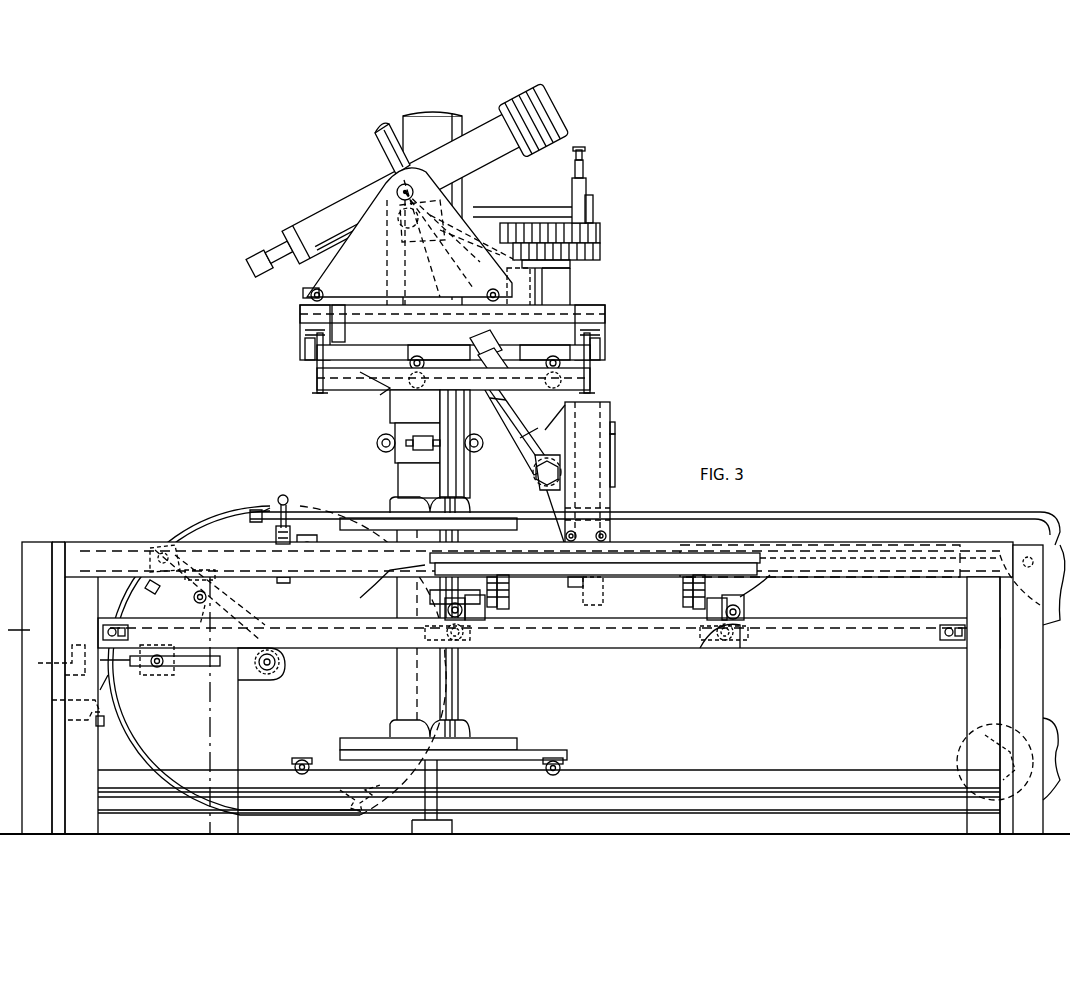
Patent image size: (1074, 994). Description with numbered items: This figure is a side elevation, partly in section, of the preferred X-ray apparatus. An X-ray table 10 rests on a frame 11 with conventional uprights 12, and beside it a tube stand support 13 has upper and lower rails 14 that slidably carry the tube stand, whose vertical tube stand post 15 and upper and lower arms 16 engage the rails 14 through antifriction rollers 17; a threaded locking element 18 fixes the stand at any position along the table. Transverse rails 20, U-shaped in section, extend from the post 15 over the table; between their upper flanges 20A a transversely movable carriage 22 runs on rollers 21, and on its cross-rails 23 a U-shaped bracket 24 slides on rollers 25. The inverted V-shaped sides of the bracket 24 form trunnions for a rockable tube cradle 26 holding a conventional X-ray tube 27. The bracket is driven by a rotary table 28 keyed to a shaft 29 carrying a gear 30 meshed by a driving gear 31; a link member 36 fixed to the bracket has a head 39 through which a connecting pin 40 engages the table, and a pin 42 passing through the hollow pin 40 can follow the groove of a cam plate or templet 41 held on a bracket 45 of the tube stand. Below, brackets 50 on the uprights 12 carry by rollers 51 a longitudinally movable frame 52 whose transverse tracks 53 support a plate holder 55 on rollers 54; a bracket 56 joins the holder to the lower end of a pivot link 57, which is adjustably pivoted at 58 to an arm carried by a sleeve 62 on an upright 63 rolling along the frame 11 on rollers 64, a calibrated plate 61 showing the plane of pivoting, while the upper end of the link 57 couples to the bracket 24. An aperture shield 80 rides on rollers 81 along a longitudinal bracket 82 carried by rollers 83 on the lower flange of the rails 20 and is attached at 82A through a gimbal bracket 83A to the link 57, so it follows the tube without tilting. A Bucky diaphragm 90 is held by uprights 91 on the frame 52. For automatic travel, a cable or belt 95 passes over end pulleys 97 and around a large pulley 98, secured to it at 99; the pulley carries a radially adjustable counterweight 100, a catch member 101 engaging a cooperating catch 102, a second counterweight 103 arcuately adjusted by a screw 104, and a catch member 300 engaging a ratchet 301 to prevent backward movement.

The X-ray table 10 is at (930, 547).
The frame 11 is at (130, 542).
The uprights 12 is at (82, 606).
The tube stand support 13 is at (1012, 692).
The upper and lower rails 14 is at (58, 542).
The tube stand post 15 is at (405, 480).
The upper and lower arms 16 is at (392, 505).
The antifriction rollers 17 is at (280, 577).
The threaded locking element 18 is at (276, 510).
The transverse rails 20 is at (305, 348).
The upper flanges 20A is at (300, 326).
The rollers 21 is at (582, 310).
The transversely movable carriage 22 is at (345, 336).
The cross-rails 23 is at (355, 306).
The U-shaped bracket 24 is at (350, 255).
The rollers 25 is at (302, 294).
The rockable tube cradle 26 is at (462, 222).
The X-ray tube 27 is at (360, 200).
The rotary table 28 is at (600, 227).
The shaft 29 is at (565, 266).
The gear 30 is at (556, 287).
The driving gear 31 is at (519, 287).
The link member 36 is at (532, 210).
The head 39 is at (603, 208).
The connecting pin 40 is at (586, 185).
The cam plate or templet 41 is at (601, 250).
The pin 42 is at (584, 160).
The bracket of the tube stand 45 is at (570, 283).
The longitudinally extending brackets 50 is at (845, 640).
The rollers 51 is at (716, 644).
The longitudinally movable frame 52 is at (445, 628).
The transverse tracks 53 is at (490, 602).
The rollers 54 is at (505, 588).
The plate holder 55 is at (740, 560).
The bracket 56 is at (588, 590).
The pivot link 57 is at (373, 130).
The adjustable pivot 58 is at (538, 478).
The calibrated plate 61 is at (612, 476).
The sleeve 62 is at (615, 445).
The upright 63 is at (595, 418).
The rollers 64 is at (606, 537).
The aperture shield 80 is at (422, 352).
The rollers 81 is at (425, 385).
The longitudinally extending bracket 82 is at (380, 390).
The shield attachment 82A is at (498, 340).
The rollers 83 is at (316, 366).
The gimbal bracket 83A is at (480, 372).
The diaphragm 90 is at (710, 555).
The uprights 91 is at (1050, 520).
The cable or belt 95 is at (858, 512).
The end pulleys 97 is at (1043, 722).
The large end pulley 98 is at (212, 528).
The cable securing point 99 is at (256, 510).
The radially adjustable counterweight member 100 is at (170, 672).
The catch member 101 is at (71, 685).
The cooperating catch member 102 is at (120, 678).
The second counterweight 103 is at (190, 604).
The adjusting screw 104 is at (158, 557).
The catch member 300 is at (236, 528).
The ratchet 301 is at (368, 795).